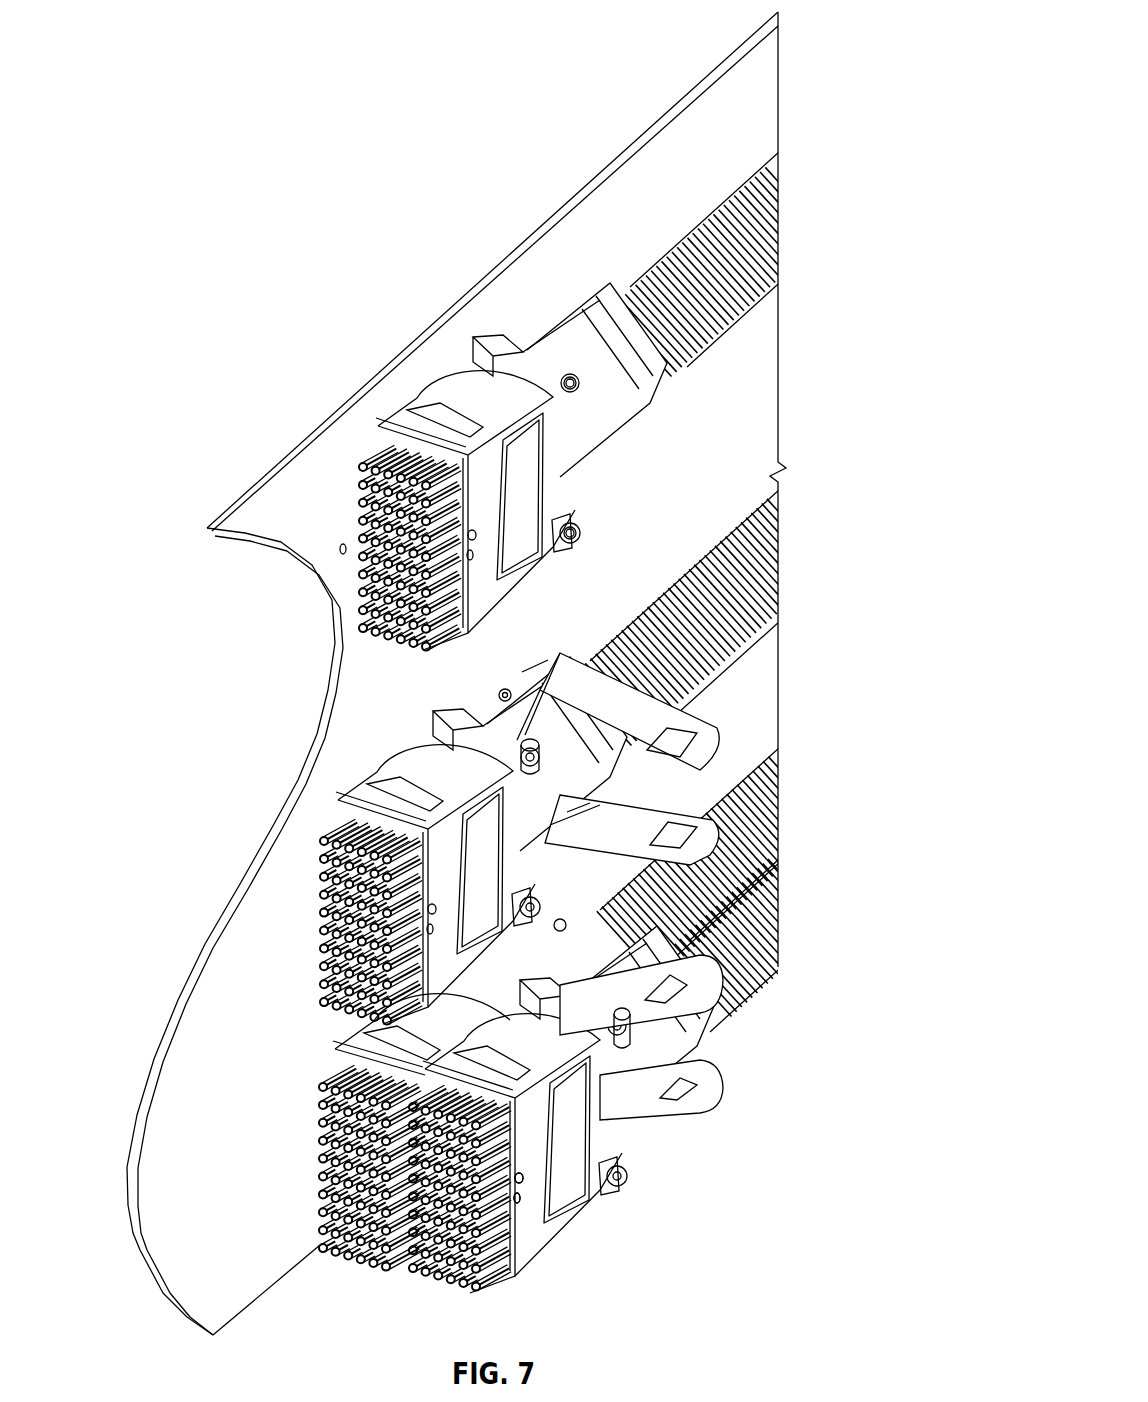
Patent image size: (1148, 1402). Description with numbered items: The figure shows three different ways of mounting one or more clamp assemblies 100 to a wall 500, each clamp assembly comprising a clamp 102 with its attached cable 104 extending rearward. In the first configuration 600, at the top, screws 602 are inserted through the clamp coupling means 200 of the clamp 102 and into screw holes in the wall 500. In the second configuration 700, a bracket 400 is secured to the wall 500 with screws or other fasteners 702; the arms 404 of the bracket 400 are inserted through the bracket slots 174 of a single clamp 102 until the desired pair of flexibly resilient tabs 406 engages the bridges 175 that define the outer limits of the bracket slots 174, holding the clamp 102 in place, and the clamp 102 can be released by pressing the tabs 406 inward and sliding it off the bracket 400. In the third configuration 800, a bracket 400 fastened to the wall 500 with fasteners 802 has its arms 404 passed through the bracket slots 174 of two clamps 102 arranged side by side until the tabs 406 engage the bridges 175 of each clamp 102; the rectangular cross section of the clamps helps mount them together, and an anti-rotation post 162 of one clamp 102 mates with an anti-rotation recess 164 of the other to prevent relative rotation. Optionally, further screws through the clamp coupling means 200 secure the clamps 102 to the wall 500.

The clamp assembly 100 is at (580, 276).
The clamp 102 is at (443, 393).
The cable 104 is at (748, 192).
The anti-rotation post 162 is at (535, 1190).
The anti-rotation recess 164 is at (530, 1210).
The bracket slot 174 is at (597, 652).
The bridge 175 is at (540, 677).
The clamp coupling means 200 is at (585, 537).
The bracket 400 is at (723, 750).
The arm 404 is at (617, 800).
The tab 406 is at (567, 670).
The wall 500 is at (262, 478).
The first configuration 600 is at (352, 521).
The screw 602 is at (586, 392).
The second configuration 700 is at (306, 955).
The fastener 702 is at (503, 693).
The third configuration 800 is at (292, 1182).
The fastener 802 is at (560, 920).